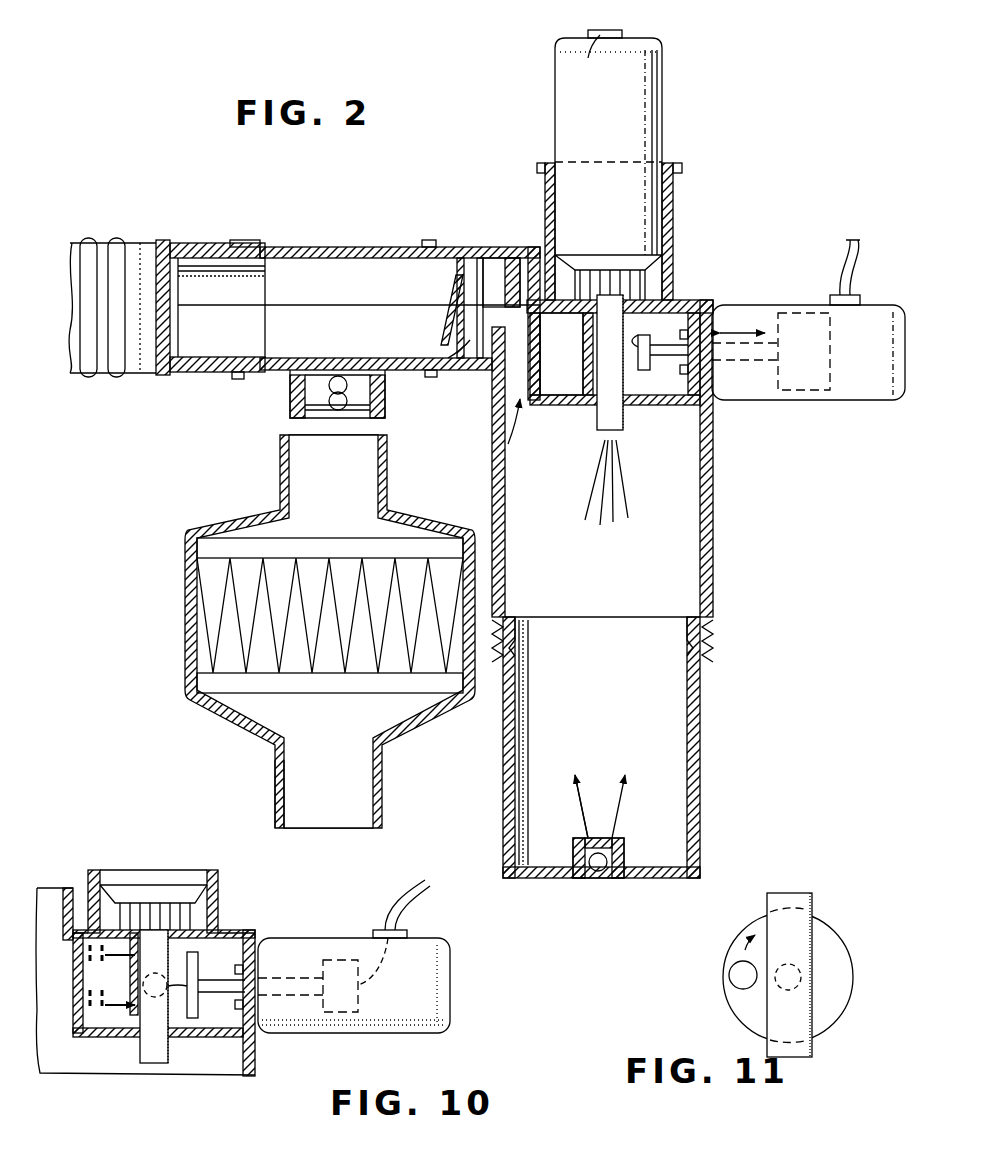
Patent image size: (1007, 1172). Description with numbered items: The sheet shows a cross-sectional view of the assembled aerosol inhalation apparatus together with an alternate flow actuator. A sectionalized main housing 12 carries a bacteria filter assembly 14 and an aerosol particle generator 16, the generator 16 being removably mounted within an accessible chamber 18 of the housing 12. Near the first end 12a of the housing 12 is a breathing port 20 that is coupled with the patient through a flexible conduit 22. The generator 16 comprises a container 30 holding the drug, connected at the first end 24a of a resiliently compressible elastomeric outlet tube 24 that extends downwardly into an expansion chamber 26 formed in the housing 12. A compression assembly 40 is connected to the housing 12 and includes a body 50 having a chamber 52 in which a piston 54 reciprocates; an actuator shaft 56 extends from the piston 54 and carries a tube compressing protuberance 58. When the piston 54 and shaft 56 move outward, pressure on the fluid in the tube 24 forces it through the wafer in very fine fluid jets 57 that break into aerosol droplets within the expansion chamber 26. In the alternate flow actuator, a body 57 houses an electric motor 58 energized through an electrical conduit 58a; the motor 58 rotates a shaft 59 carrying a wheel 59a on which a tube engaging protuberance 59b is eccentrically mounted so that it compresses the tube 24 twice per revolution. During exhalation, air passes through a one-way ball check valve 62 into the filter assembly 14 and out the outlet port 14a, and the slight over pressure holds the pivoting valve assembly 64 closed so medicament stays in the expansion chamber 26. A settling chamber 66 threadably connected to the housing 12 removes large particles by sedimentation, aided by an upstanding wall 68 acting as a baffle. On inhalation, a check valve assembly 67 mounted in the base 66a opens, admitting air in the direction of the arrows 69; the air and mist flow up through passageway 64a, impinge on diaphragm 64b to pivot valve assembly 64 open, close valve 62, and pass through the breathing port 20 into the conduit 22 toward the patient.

In FIG. 2, the main housing 12 is at (350, 240).
In FIG. 2, the first end of housing 12a is at (268, 245).
In FIG. 2, the bacteria filter assembly 14 is at (185, 624).
In FIG. 2, the outlet port 14a is at (282, 795).
In FIG. 2, the aerosol particle generator 16 is at (665, 95).
In FIG. 10, the aerosol particle generator 16 is at (128, 868).
In FIG. 2, the chamber 18 is at (555, 200).
In FIG. 10, the chamber 18 is at (105, 872).
In FIG. 2, the breathing port 20 is at (208, 330).
In FIG. 2, the flexible conduit 22 is at (129, 250).
In FIG. 2, the outlet tube 24 is at (600, 410).
In FIG. 10, the outlet tube 24 is at (138, 1047).
In FIG. 11, the outlet tube 24 is at (812, 903).
In FIG. 2, the first end of outlet tube 24a is at (612, 300).
In FIG. 2, the expansion chamber 26 is at (660, 572).
In FIG. 10, the expansion chamber 26 is at (250, 1062).
In FIG. 2, the container 30 is at (555, 92).
In FIG. 10, the container 30 is at (150, 893).
In FIG. 2, the compression assembly 40 is at (746, 300).
In FIG. 2, the body 50 is at (877, 316).
In FIG. 2, the chamber 52 is at (868, 368).
In FIG. 2, the piston 54 is at (800, 320).
In FIG. 2, the actuator shaft 56 is at (750, 385).
In FIG. 2, the fluid jets 57 is at (617, 508).
In FIG. 10, the fluid jets 57 is at (448, 988).
In FIG. 2, the tube compressing protuberance 58 is at (645, 372).
In FIG. 10, the tube compressing protuberance 58 is at (352, 1014).
In FIG. 10, the electrical conduit 58a is at (398, 895).
In FIG. 10, the shaft 59 is at (323, 978).
In FIG. 11, the shaft 59 is at (800, 968).
In FIG. 10, the wheel 59a is at (195, 965).
In FIG. 11, the wheel 59a is at (830, 1000).
In FIG. 10, the tube engaging protuberance 59b is at (178, 1000).
In FIG. 11, the tube engaging protuberance 59b is at (735, 977).
In FIG. 2, the one-way ball check valve 62 is at (338, 380).
In FIG. 2, the pivoting valve assembly 64 is at (457, 290).
In FIG. 2, the passageway 64a is at (468, 342).
In FIG. 2, the diaphragm 64b is at (452, 325).
In FIG. 2, the settling chamber 66 is at (700, 707).
In FIG. 2, the base 66a is at (545, 875).
In FIG. 2, the check valve assembly 67 is at (598, 866).
In FIG. 2, the upstanding wall 68 is at (500, 345).
In FIG. 2, the arrows 69 is at (622, 790).